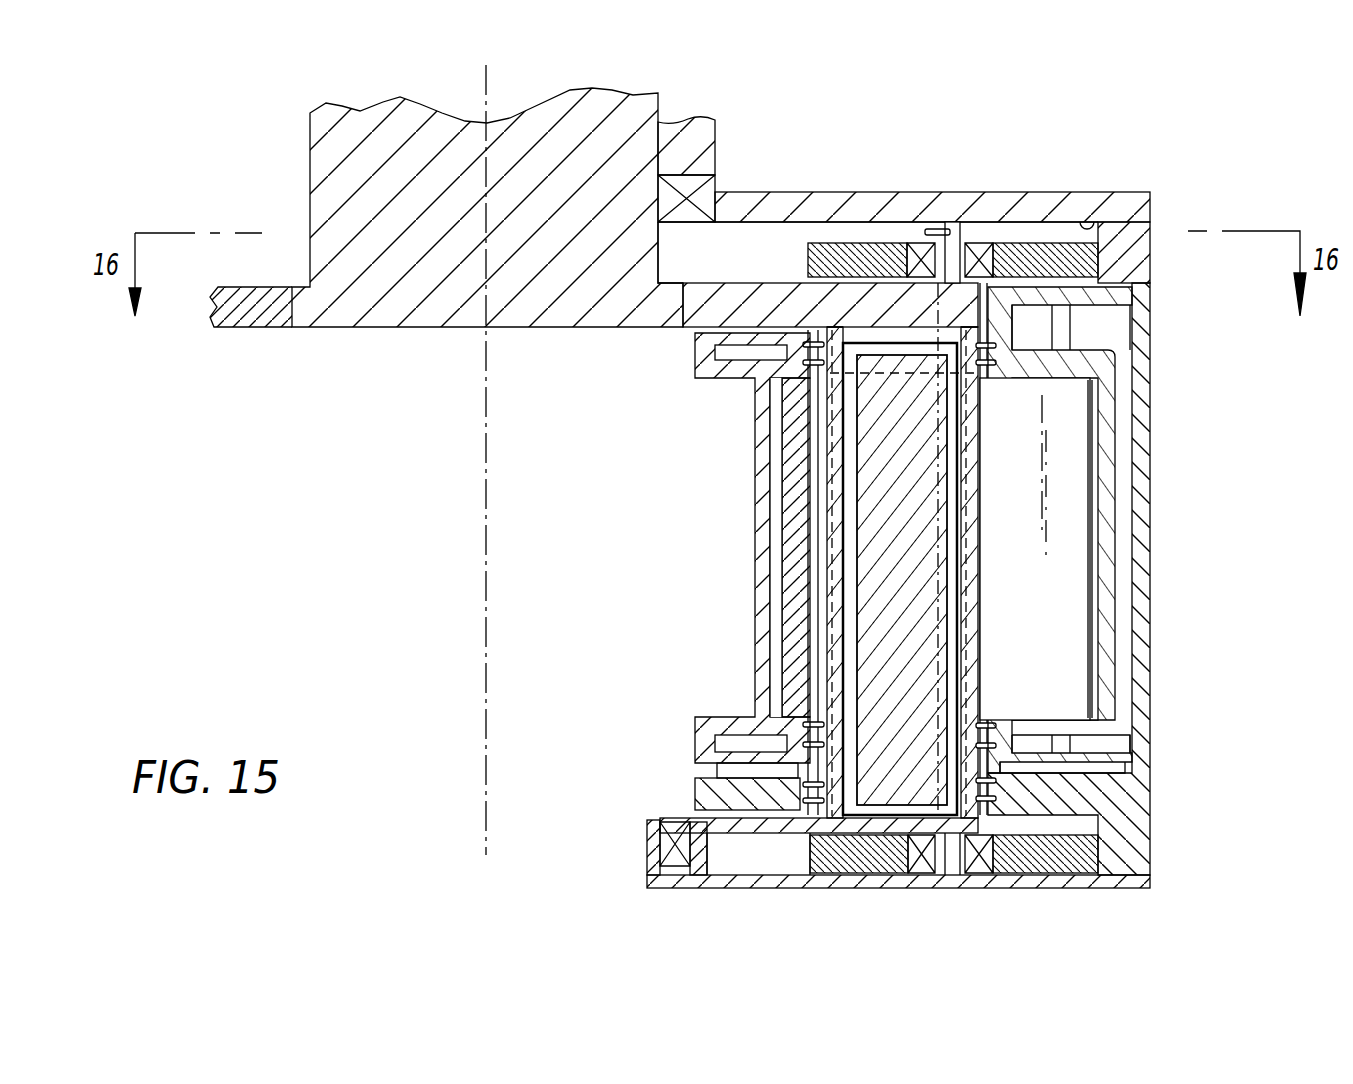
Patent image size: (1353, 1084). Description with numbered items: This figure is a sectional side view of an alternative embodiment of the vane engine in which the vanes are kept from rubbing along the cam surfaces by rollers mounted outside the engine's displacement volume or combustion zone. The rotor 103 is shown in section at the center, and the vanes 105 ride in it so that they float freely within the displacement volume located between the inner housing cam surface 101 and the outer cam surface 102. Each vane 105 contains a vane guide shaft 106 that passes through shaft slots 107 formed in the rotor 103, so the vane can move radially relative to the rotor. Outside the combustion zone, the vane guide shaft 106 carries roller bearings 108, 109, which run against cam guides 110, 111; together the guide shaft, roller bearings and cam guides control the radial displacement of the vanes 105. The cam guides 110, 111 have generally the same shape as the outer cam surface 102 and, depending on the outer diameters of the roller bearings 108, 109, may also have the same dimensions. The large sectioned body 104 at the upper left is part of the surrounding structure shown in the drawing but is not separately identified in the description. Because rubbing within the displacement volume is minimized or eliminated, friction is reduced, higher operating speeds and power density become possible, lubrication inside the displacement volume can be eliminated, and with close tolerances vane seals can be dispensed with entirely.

The inner housing cam surface 101 is at (815, 500).
The outer cam surface 102 is at (1090, 478).
The rotor 103 is at (740, 285).
The support block 104 is at (660, 129).
The vanes 105 is at (805, 573).
The vane guide shaft 106 is at (950, 232).
The shaft slots 107 is at (838, 455).
The roller bearing 108 is at (828, 243).
The roller bearing 109 is at (805, 850).
The cam guide 110 is at (1087, 228).
The cam guide 111 is at (1090, 833).